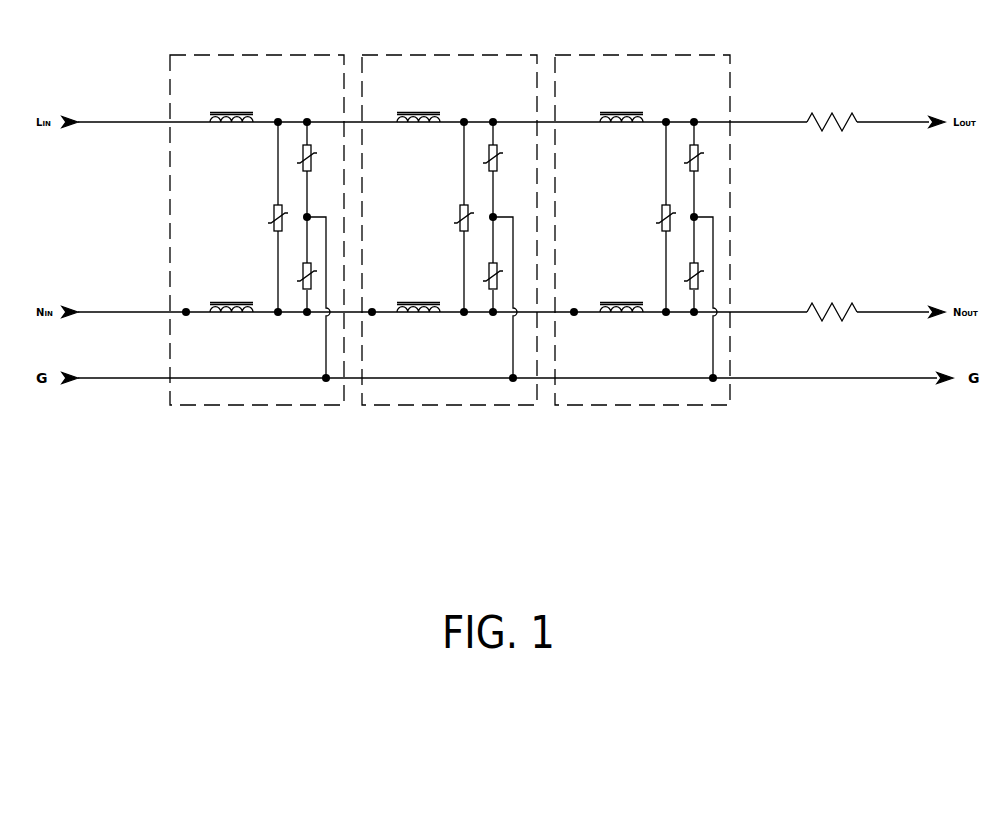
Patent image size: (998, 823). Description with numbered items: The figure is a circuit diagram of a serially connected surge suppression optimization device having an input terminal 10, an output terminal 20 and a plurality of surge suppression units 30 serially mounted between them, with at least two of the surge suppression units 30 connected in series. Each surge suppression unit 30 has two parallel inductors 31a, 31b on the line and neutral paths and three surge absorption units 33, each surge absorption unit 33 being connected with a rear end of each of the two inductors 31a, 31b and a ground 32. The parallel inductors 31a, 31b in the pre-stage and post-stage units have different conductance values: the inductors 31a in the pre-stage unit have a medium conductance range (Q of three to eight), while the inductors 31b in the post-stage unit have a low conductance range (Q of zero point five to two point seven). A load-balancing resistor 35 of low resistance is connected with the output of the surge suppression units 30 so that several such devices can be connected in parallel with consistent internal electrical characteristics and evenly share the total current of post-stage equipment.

The input terminal 10 is at (78, 116).
The output terminal 20 is at (943, 110).
The surge suppression unit 30 is at (213, 405).
The parallel inductor (pre-stage) 31a is at (231, 108).
The parallel inductor (post-stage) 31b is at (418, 107).
The ground 32 is at (772, 380).
The surge absorption unit 33 is at (323, 153).
The load-balancing resistor 35 is at (828, 110).